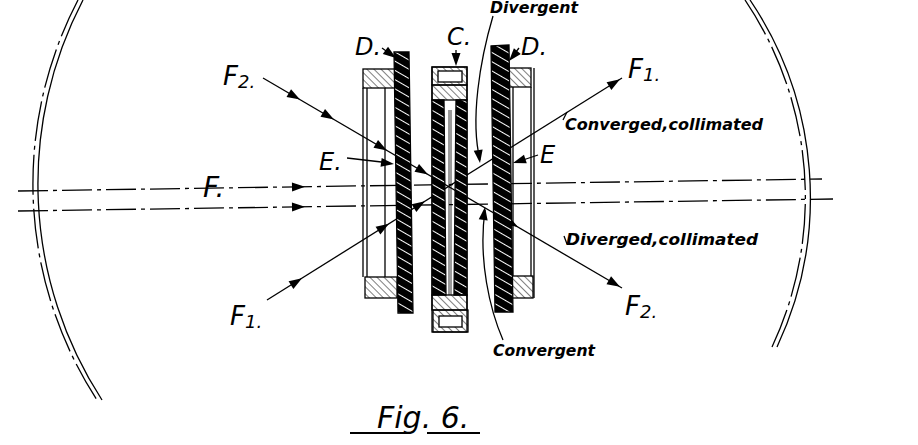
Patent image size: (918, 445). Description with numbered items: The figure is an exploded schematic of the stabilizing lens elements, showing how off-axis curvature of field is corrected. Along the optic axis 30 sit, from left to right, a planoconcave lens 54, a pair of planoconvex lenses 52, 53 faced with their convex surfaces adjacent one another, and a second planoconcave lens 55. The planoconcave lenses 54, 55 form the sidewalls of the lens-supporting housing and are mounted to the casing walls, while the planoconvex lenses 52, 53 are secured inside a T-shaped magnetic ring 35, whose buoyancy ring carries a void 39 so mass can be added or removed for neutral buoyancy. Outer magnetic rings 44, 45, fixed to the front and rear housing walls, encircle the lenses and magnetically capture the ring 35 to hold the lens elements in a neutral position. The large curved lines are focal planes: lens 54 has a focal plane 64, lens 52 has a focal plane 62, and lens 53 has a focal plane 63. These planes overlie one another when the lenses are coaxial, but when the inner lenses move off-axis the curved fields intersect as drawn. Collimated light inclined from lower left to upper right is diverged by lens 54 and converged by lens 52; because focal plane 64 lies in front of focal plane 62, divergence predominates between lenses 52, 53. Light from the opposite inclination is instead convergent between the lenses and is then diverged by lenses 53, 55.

The optic axis 30 is at (138, 190).
The ring 35 is at (450, 210).
The void 39 is at (437, 104).
The outer magnetic ring 44 is at (533, 298).
The outer magnetic ring 45 is at (368, 299).
The planoconvex lens 52 is at (438, 290).
The planoconvex lens 53 is at (466, 298).
The planoconcave lens 54 is at (392, 214).
The planoconcave lens 55 is at (513, 211).
The focal plane 62 is at (86, 12).
The focal plane 63 is at (745, 10).
The focal plane 64 is at (78, 10).